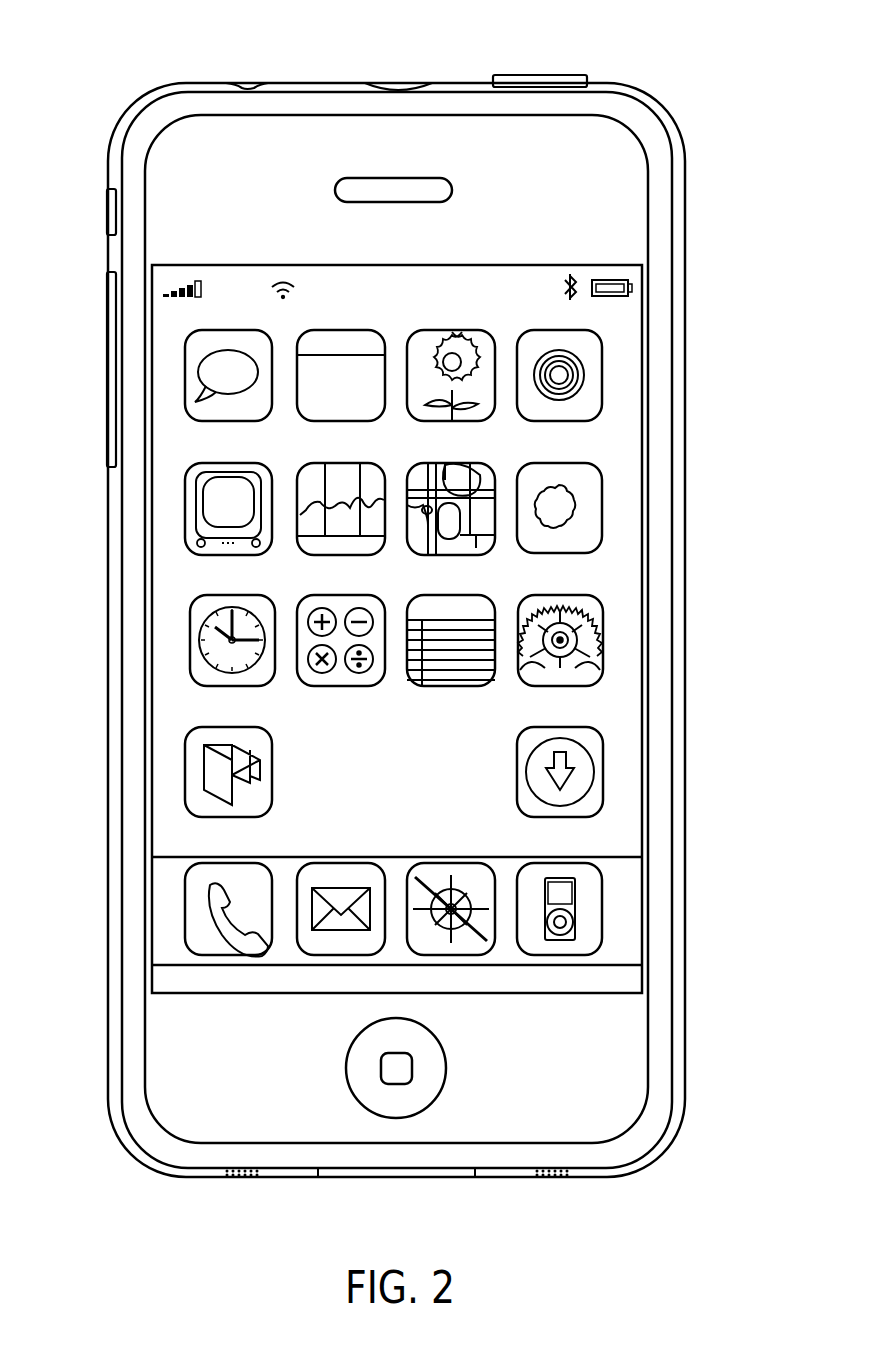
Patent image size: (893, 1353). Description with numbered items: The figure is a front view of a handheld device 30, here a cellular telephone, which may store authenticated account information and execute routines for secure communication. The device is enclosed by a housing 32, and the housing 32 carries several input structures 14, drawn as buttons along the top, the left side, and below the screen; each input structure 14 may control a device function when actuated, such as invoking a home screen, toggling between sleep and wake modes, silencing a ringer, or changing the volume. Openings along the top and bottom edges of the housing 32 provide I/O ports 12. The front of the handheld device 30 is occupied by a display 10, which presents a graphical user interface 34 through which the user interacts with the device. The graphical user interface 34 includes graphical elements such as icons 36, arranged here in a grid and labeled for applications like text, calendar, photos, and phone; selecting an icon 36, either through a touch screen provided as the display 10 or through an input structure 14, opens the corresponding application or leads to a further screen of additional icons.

The display 10 is at (643, 506).
The I/O ports 12 is at (247, 83).
The input structures 14 is at (540, 75).
The handheld device 30 is at (132, 50).
The housing 32 is at (684, 262).
The graphical user interface 34 is at (162, 595).
The icons 36 is at (340, 330).